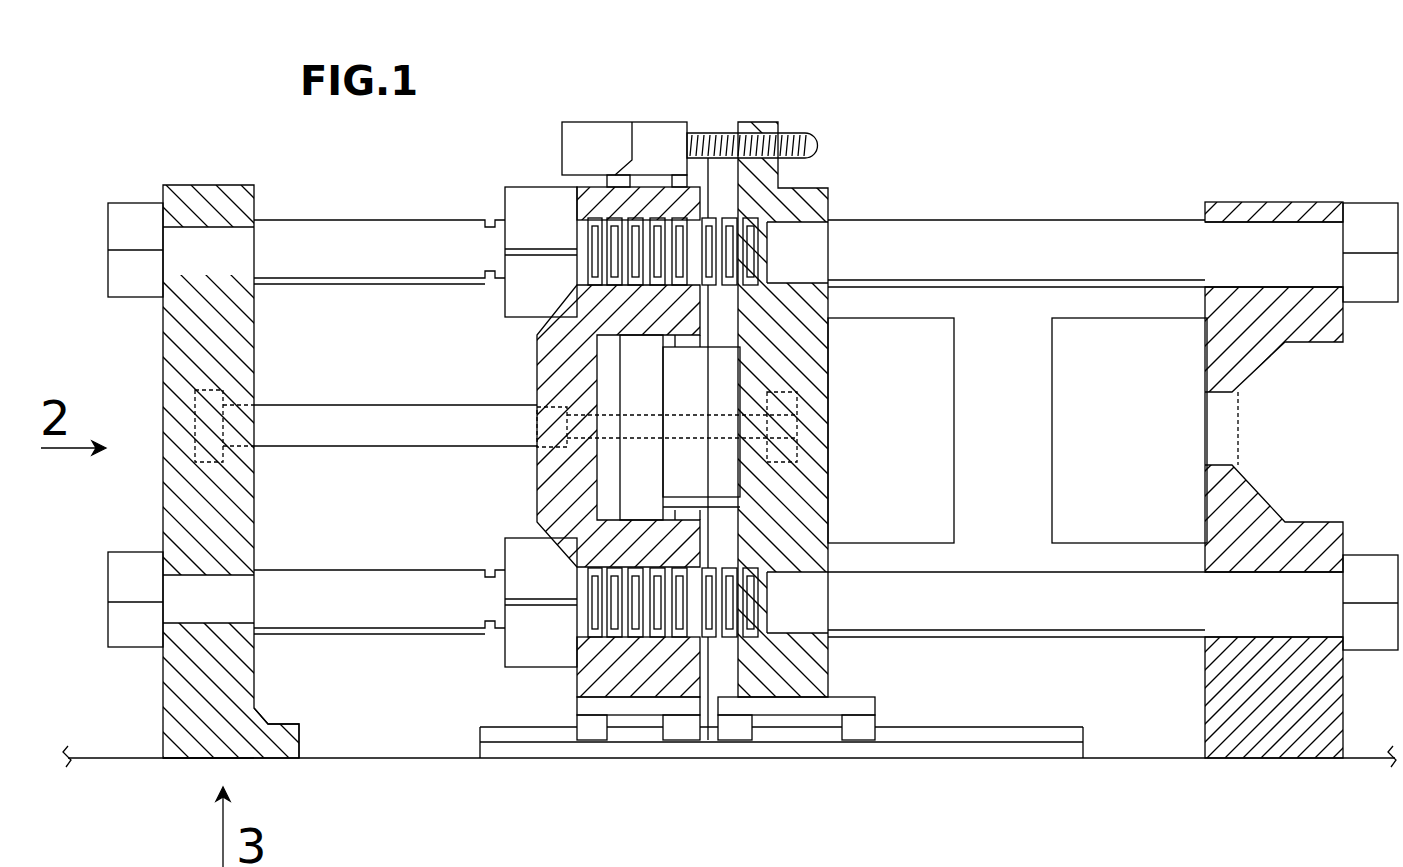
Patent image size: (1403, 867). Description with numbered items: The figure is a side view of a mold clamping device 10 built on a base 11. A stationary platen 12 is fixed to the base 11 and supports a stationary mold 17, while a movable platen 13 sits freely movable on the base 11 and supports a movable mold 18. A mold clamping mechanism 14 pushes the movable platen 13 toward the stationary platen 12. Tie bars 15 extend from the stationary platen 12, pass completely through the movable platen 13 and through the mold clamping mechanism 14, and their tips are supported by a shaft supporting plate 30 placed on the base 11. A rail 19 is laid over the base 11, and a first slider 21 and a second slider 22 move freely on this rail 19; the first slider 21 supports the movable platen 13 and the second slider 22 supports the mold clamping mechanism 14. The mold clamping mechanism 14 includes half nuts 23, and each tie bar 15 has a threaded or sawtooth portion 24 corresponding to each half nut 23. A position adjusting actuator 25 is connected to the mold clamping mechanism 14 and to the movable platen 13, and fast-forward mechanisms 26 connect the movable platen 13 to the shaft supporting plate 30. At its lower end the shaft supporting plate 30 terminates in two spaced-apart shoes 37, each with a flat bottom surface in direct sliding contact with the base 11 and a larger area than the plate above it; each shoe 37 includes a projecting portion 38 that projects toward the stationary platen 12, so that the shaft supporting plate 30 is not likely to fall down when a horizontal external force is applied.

The mold clamping device 10 is at (1163, 107).
The base 11 is at (1158, 742).
The stationary platen 12 is at (1270, 210).
The movable platen 13 is at (822, 188).
The mold clamping mechanism 14 is at (577, 205).
The tie bars 15 is at (1025, 245).
The stationary mold 17 is at (1090, 360).
The movable mold 18 is at (920, 502).
The rail 19 is at (948, 735).
The first slider 21 is at (795, 705).
The second slider 22 is at (635, 705).
The half nuts 23 is at (522, 207).
The threaded or sawtooth portion 24 is at (708, 200).
The position adjusting actuator 25 is at (655, 140).
The fast-forward mechanisms 26 is at (375, 425).
The shaft supporting plate 30 is at (216, 205).
The shoe 37 is at (195, 758).
The projecting portion 38 is at (290, 735).